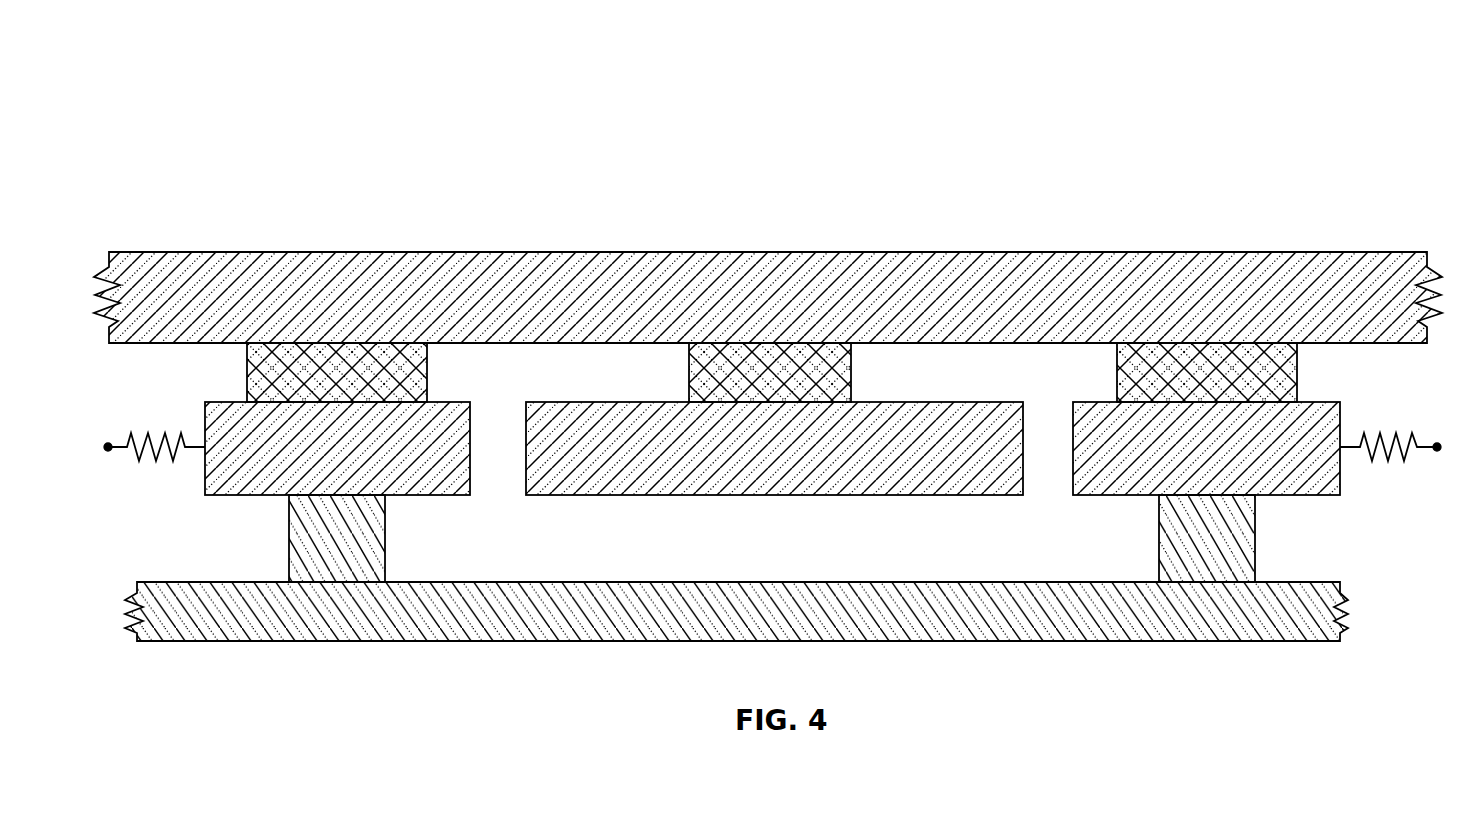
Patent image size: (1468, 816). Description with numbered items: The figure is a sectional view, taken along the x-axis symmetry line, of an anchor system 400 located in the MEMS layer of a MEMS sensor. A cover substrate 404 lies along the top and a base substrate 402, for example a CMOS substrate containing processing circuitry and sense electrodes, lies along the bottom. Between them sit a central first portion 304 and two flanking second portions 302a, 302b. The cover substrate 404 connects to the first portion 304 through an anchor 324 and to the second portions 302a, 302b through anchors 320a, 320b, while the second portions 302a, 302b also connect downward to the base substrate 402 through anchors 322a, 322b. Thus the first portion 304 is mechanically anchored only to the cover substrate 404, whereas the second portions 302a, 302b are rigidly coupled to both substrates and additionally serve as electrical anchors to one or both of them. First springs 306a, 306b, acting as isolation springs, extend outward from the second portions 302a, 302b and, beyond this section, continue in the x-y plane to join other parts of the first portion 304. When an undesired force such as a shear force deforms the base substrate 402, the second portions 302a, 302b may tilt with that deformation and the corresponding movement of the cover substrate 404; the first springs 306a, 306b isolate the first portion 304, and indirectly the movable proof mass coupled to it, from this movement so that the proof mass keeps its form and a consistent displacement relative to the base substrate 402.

The anchor system 400 is at (247, 99).
The cover substrate 404 is at (258, 250).
The base substrate 402 is at (655, 582).
The anchor 320a is at (247, 383).
The anchor 324 is at (689, 382).
The anchor 320b is at (1297, 362).
The second portion 302a is at (450, 402).
The first portion 304 is at (875, 402).
The second portion 302b is at (1100, 402).
The anchor 322a is at (385, 533).
The anchor 322b is at (1159, 550).
The first spring 306a is at (152, 465).
The first spring 306b is at (1405, 465).